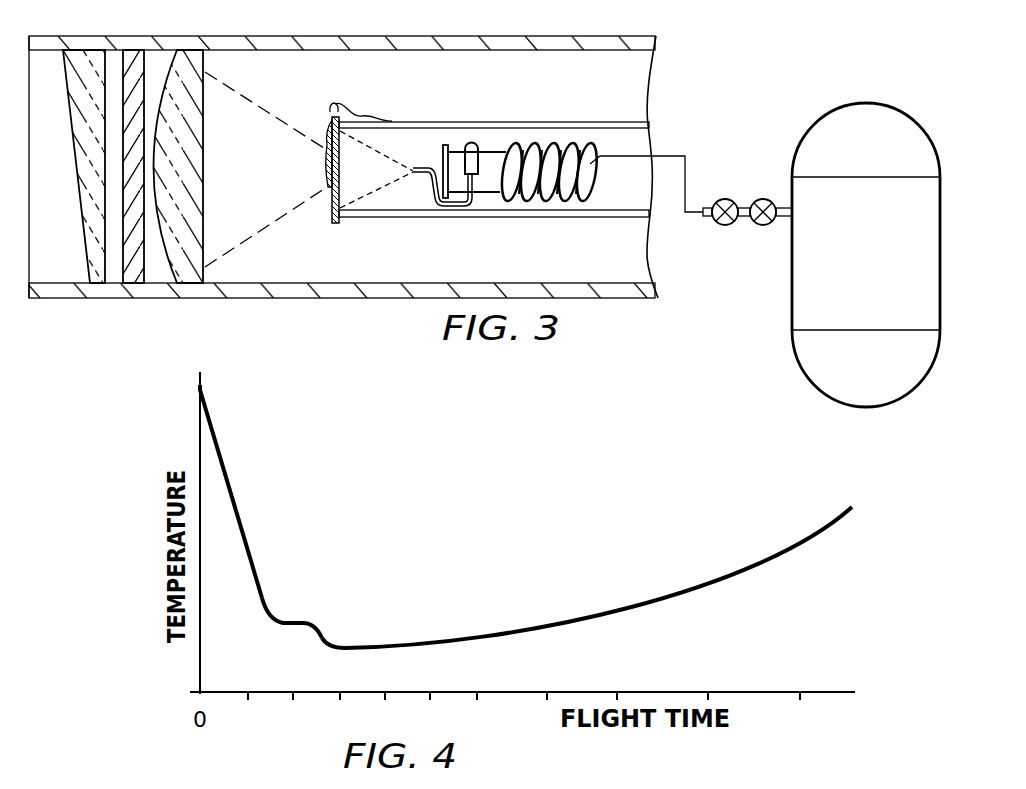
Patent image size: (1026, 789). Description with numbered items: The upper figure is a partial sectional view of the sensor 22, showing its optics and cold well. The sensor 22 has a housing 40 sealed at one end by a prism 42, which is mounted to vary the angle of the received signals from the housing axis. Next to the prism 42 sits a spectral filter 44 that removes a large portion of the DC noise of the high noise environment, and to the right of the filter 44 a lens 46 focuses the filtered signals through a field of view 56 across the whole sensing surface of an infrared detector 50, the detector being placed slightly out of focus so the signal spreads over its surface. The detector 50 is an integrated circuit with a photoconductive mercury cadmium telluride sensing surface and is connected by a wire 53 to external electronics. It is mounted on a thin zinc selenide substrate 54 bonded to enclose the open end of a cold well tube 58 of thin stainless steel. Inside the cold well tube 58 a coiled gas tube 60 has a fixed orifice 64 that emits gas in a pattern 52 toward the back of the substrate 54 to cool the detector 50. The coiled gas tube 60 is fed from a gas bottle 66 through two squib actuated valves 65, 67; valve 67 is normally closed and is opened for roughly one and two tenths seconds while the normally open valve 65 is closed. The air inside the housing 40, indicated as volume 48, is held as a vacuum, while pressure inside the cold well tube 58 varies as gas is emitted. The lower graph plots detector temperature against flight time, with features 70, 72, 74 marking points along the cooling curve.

In FIG. 3, the sensor 22 is at (343, 161).
In FIG. 3, the housing 40 is at (537, 43).
In FIG. 3, the prism 42 is at (82, 60).
In FIG. 3, the spectral filter 44 is at (133, 70).
In FIG. 3, the lens 46 is at (187, 73).
In FIG. 3, the volume 48 is at (541, 267).
In FIG. 3, the infrared detector 50 is at (327, 152).
In FIG. 3, the pattern 52 is at (382, 189).
In FIG. 3, the wire 53 is at (365, 116).
In FIG. 3, the substrate 54 is at (330, 218).
In FIG. 3, the field of view 56 is at (280, 219).
In FIG. 3, the cold well tube 58 is at (473, 122).
In FIG. 3, the coiled gas tube 60 is at (472, 208).
In FIG. 3, the fixed orifice 64 is at (415, 165).
In FIG. 3, the squib actuated valve 65 is at (722, 199).
In FIG. 3, the gas bottle 66 is at (855, 103).
In FIG. 3, the squib actuated valve 67 is at (763, 199).
In FIG. 4, the first temperature curve knee 70 is at (273, 609).
In FIG. 4, the temperature curve step 72 is at (310, 626).
In FIG. 4, the temperature curve trough 74 is at (324, 641).